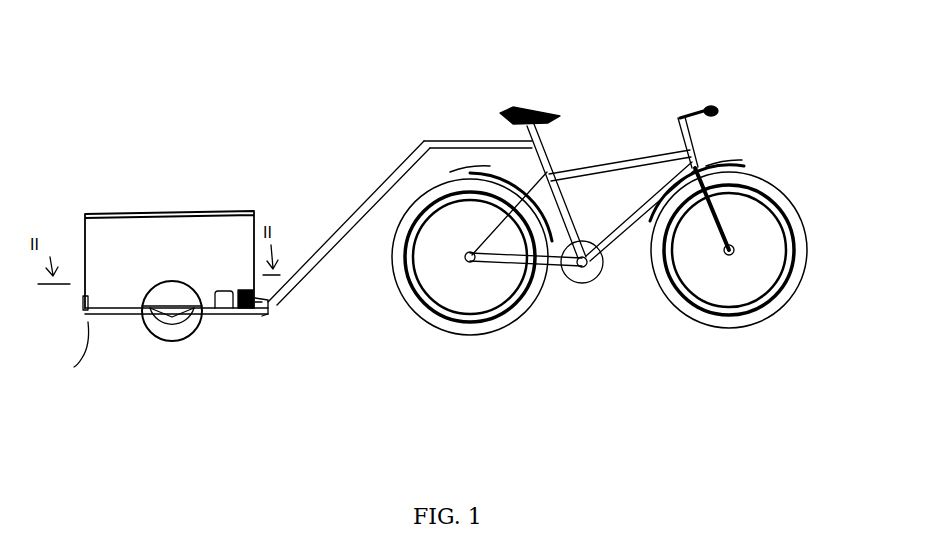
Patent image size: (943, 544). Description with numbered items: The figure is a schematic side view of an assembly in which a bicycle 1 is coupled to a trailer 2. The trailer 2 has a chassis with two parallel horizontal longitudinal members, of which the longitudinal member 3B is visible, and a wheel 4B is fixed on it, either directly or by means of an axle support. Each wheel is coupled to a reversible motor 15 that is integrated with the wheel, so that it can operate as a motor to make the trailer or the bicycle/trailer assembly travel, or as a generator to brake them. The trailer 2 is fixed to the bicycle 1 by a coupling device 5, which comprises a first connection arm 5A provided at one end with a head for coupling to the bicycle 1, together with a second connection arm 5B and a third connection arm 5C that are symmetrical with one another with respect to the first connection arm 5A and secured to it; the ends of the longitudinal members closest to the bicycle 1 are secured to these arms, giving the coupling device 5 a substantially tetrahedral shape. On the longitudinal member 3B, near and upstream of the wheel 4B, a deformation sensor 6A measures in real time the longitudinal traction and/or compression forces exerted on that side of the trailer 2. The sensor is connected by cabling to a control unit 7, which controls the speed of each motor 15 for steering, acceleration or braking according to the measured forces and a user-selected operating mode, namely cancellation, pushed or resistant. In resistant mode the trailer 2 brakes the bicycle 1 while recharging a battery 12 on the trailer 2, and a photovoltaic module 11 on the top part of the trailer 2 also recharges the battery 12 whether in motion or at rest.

The bicycle 1 is at (614, 73).
The trailer 2 is at (152, 131).
The longitudinal member 3B is at (66, 362).
The wheel 4B is at (197, 349).
The coupling device 5 is at (394, 102).
The first connection arm 5A is at (460, 126).
The second connection arm 5B is at (351, 191).
The third connection arm 5C is at (349, 223).
The deformation sensor 6A is at (218, 324).
The control unit 7 is at (236, 318).
The photovoltaic module 11 is at (216, 205).
The battery 12 is at (272, 310).
The motor 15 is at (174, 342).